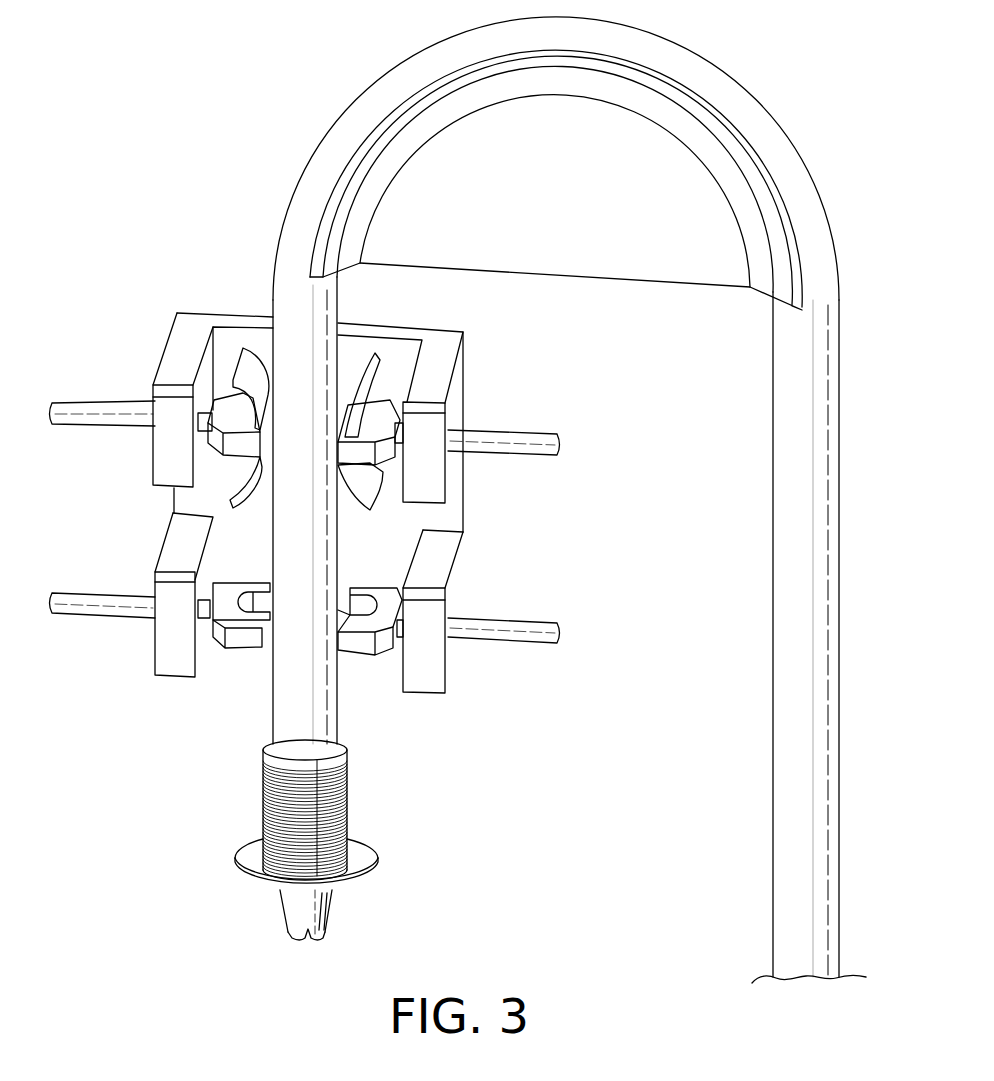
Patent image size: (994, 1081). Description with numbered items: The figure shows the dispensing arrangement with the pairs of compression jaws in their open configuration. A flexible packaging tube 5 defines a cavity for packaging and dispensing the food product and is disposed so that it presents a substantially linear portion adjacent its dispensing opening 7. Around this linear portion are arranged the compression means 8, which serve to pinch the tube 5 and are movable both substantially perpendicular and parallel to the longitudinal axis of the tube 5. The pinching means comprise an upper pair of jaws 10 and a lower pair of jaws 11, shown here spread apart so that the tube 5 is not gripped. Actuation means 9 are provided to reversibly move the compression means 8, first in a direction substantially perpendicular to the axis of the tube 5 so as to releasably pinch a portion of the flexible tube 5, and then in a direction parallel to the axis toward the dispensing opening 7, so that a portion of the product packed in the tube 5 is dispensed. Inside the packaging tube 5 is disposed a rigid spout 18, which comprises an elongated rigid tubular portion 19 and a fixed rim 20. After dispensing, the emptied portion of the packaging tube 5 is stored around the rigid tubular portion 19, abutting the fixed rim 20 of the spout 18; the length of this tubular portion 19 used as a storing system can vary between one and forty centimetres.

The flexible packaging tube 5 is at (323, 140).
The dispensing opening 7 is at (305, 948).
The compression means 8 is at (139, 314).
The actuation means 9 is at (68, 408).
The upper pair of jaws 10 is at (222, 407).
The lower pair of jaws 11 is at (228, 590).
The rigid spout 18 is at (290, 913).
The rigid tubular portion 19 is at (260, 779).
The fixed rim 20 is at (247, 853).